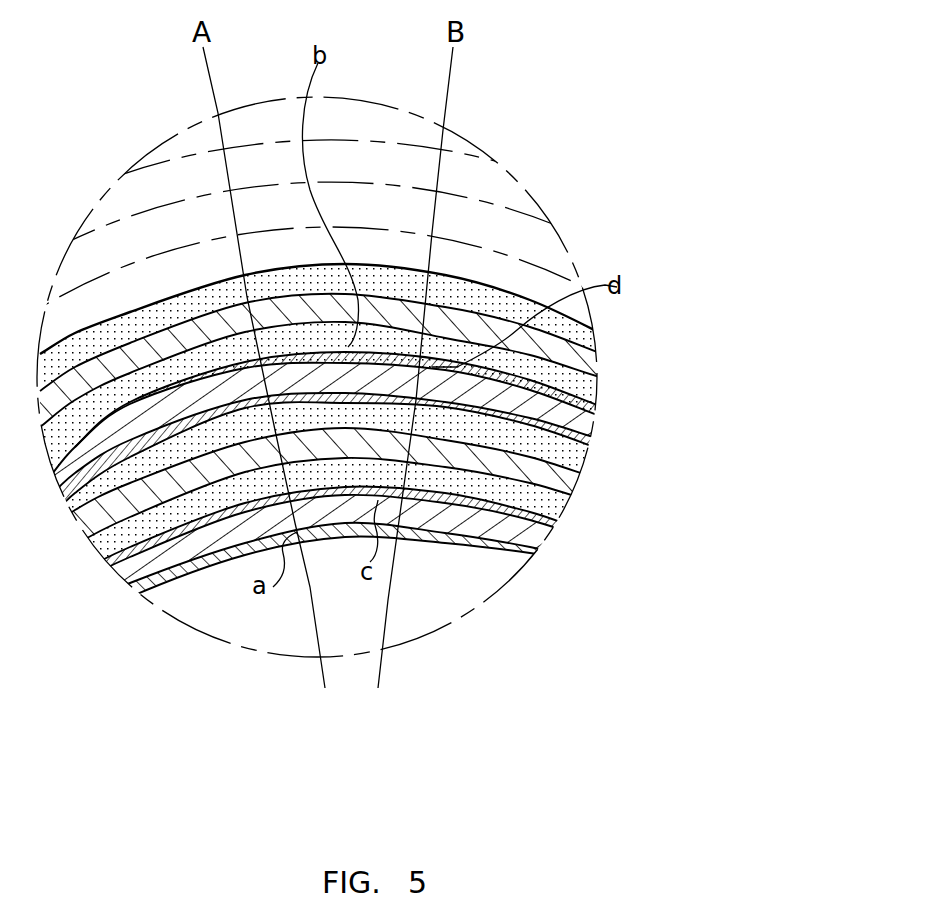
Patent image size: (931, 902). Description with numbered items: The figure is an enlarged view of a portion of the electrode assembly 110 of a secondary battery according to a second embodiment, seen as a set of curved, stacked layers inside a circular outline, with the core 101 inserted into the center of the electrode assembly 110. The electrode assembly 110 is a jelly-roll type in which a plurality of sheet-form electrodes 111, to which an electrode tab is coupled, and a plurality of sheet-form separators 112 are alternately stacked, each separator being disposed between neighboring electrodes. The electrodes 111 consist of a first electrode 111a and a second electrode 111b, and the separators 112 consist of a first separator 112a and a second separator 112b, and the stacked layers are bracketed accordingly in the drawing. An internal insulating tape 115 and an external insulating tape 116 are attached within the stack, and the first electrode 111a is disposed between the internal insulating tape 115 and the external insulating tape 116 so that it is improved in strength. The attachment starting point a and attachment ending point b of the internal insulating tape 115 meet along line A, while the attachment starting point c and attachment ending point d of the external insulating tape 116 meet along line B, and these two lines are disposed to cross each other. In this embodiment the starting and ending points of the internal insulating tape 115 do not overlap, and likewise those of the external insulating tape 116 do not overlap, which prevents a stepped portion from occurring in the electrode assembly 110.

The core 101 is at (270, 627).
The electrode assembly 110 is at (417, 464).
The electrodes 111 is at (387, 546).
The first electrode 111a is at (533, 543).
The second electrode 111b is at (563, 478).
The separators 112 is at (387, 444).
The first separator 112a is at (510, 420).
The second separator 112b is at (547, 397).
The internal insulating tape 115 is at (497, 555).
The external insulating tape 116 is at (532, 547).